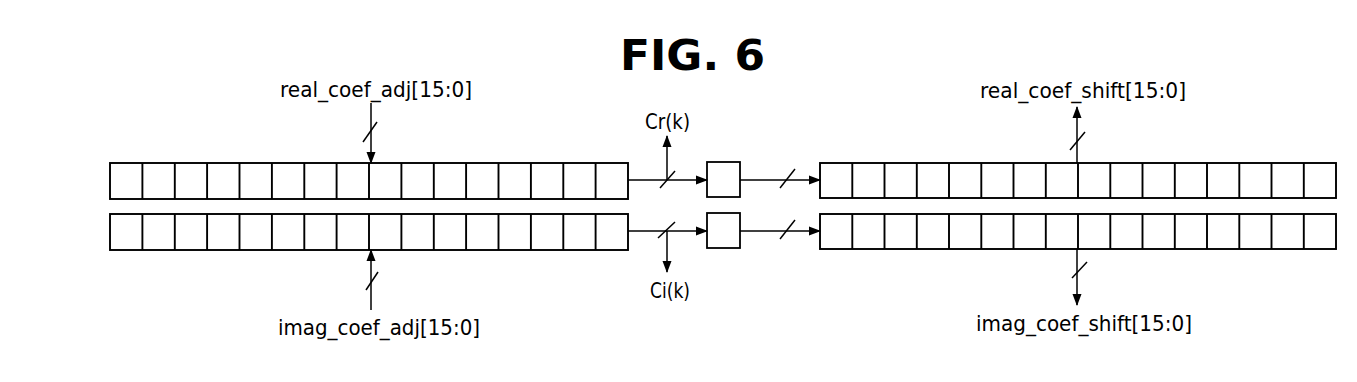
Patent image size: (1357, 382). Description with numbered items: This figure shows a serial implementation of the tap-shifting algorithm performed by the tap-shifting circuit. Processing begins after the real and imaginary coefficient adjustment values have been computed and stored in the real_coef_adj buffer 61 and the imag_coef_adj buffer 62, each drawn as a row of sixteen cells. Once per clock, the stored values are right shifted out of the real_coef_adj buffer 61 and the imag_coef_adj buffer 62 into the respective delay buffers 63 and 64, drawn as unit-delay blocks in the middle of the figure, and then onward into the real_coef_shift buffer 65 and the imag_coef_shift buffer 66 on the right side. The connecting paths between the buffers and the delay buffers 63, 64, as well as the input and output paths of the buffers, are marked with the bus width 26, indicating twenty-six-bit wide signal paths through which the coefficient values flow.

The 26-bit bus 26 is at (713, 206).
The real_coef_adj buffer 61 is at (448, 163).
The imag_coef_adj buffer 62 is at (453, 250).
The delay buffer 63 is at (722, 162).
The delay buffer 64 is at (722, 248).
The real_coef_shift buffer 65 is at (928, 163).
The imag_coef_shift buffer 66 is at (933, 249).